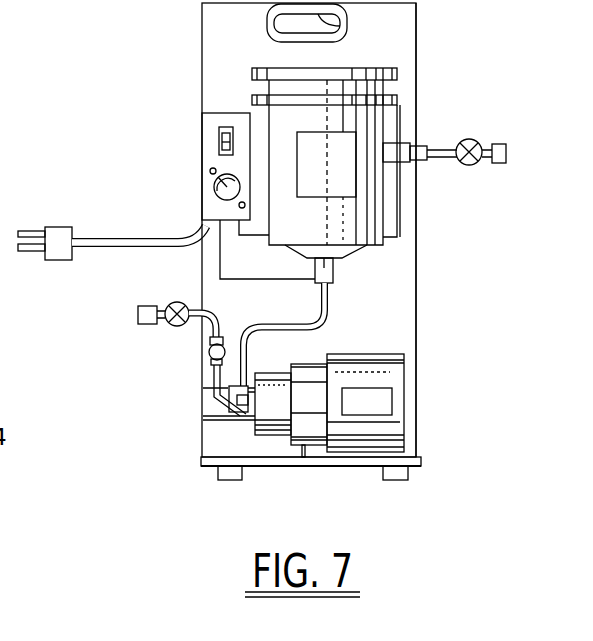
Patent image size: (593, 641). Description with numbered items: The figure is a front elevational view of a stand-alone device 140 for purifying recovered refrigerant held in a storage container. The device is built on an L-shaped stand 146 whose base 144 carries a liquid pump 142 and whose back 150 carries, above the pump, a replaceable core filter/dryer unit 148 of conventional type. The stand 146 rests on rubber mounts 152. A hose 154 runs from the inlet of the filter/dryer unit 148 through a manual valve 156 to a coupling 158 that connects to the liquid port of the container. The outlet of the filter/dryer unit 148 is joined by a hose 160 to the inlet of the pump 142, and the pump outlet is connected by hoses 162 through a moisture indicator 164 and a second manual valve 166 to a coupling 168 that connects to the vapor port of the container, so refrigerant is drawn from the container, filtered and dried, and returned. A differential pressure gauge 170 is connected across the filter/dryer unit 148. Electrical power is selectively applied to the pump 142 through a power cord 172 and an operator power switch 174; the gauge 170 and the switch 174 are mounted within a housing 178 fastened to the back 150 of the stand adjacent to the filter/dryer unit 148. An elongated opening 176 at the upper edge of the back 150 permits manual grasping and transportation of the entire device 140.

The stand-alone device 140 is at (440, 41).
The liquid pump 142 is at (393, 380).
The base 144 is at (423, 458).
The L-shaped stand 146 is at (422, 336).
The replaceable core filter/dryer unit 148 is at (380, 128).
The back 150 is at (413, 252).
The rubber mounts 152 is at (344, 495).
The hose 154 is at (439, 148).
The manual valve 156 is at (470, 166).
The coupling 158 is at (508, 152).
The hose 160 is at (327, 318).
The hoses 162 is at (197, 328).
The moisture indicator 164 is at (223, 338).
The manual valve 166 is at (178, 301).
The coupling 168 is at (137, 315).
The differential pressure gauge 170 is at (213, 188).
The power cord 172 is at (149, 211).
The operator power switch 174 is at (221, 143).
The elongated opening 176 is at (347, 24).
The housing 178 is at (210, 123).